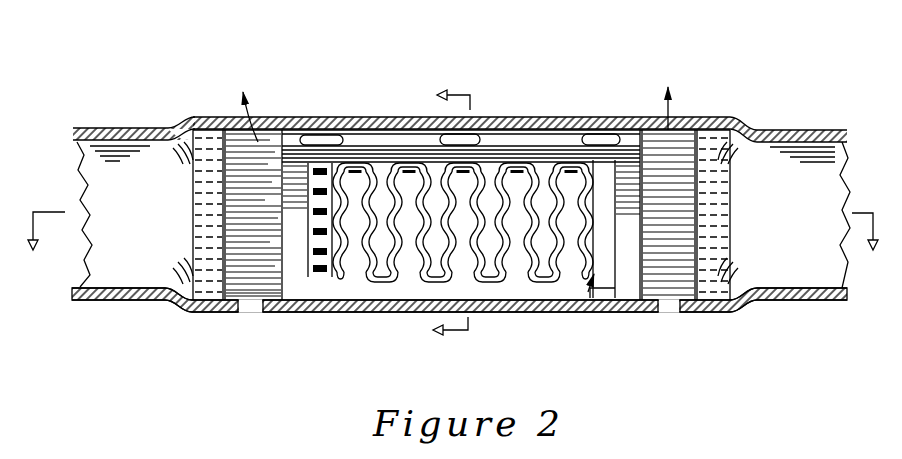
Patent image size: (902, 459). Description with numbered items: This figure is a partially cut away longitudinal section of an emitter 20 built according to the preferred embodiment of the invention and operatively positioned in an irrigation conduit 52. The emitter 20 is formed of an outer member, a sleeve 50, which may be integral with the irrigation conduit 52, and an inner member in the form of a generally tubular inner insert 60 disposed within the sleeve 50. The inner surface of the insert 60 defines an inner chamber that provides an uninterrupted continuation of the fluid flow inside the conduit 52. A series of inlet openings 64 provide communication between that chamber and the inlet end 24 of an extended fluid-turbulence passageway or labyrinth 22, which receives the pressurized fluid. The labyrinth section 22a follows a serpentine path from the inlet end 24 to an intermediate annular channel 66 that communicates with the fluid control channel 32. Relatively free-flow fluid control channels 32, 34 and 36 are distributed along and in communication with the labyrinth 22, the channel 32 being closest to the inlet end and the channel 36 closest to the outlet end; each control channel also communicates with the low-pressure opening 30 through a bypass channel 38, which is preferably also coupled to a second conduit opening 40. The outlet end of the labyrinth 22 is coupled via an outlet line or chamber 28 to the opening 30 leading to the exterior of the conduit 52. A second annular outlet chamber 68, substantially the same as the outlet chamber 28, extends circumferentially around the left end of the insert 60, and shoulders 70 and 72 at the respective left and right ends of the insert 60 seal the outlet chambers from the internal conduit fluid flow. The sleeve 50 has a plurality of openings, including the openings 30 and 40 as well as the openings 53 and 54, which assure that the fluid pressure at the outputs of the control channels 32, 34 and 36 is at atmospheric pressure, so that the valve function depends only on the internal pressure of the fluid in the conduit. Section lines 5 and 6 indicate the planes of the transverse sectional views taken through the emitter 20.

The emitter 20 is at (177, 345).
The labyrinth 22 is at (385, 283).
The labyrinth section 22a is at (533, 280).
The inlet end 24 is at (330, 280).
The outlet chamber 28 is at (663, 263).
The opening 30 is at (672, 114).
The fluid control channel 32 is at (594, 140).
The fluid control channel 34 is at (482, 122).
The fluid control channel 36 is at (323, 137).
The bypass channel 38 is at (517, 138).
The second conduit opening 40 is at (252, 128).
The sleeve 50 is at (378, 121).
The irrigation conduit 52 is at (123, 131).
The opening 53 is at (258, 302).
The opening 54 is at (667, 300).
The inner insert 60 is at (190, 228).
The inlet openings 64 is at (230, 233).
The intermediate annular channel 66 is at (607, 267).
The second annular outlet chamber 68 is at (252, 277).
The shoulder 70 is at (217, 177).
The shoulder 72 is at (718, 222).
The section line 5- 5 is at (453, 215).
The section line 6- 6 is at (464, 214).